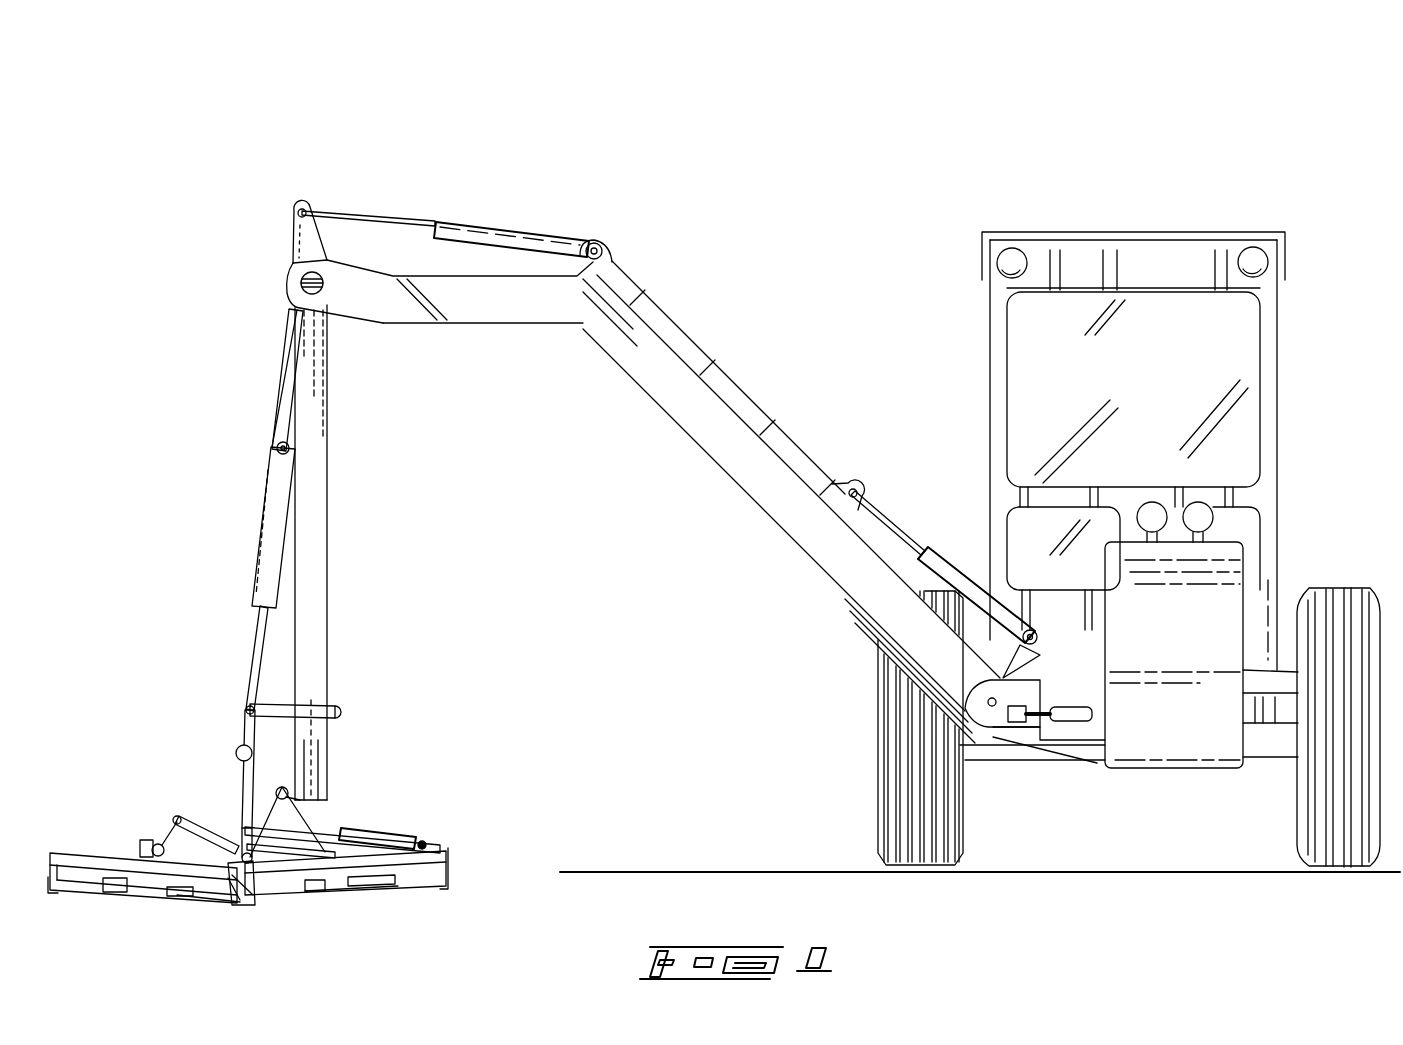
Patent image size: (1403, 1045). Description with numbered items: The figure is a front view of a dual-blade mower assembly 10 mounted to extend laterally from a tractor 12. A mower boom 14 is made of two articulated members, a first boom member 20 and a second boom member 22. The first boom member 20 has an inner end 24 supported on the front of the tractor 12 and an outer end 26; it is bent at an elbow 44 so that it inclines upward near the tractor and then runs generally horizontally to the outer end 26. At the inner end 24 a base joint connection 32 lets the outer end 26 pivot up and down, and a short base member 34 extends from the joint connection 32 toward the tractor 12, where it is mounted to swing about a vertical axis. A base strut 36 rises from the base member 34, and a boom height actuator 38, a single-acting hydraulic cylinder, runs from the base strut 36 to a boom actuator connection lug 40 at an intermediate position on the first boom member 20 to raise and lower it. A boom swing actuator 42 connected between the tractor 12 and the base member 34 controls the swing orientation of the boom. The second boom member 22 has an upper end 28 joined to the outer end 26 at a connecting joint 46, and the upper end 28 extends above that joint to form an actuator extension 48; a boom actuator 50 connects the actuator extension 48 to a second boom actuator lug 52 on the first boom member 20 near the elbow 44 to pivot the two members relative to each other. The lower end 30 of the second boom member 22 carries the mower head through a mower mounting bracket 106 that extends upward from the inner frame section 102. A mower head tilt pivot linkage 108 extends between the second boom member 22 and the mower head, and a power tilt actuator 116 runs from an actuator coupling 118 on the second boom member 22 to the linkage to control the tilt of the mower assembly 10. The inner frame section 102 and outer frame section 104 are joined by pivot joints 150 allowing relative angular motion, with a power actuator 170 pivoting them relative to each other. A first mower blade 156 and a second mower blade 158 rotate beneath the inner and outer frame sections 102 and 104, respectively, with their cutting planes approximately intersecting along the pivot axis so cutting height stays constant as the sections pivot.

The dual-blade mower assembly 10 is at (178, 712).
The tractor 12 is at (1284, 401).
The mower boom 14 is at (403, 395).
The first boom member 20 is at (745, 483).
The second boom member 22 is at (313, 610).
The inner end 24 is at (928, 637).
The outer end 26 is at (360, 300).
The upper end 28 is at (300, 340).
The lower end 30 is at (318, 762).
The base joint connection 32 is at (985, 702).
The base member 34 is at (998, 717).
The base strut 36 is at (1032, 652).
The boom height actuator 38 is at (943, 562).
The boom actuator connection lug 40 is at (838, 495).
The boom swing actuator 42 is at (1085, 722).
The elbow 44 is at (580, 303).
The connecting joint 46 is at (298, 280).
The actuator extension 48 is at (302, 208).
The boom actuator 50 is at (510, 233).
The second boom actuator lug 52 is at (610, 245).
The inner frame section 102 is at (445, 855).
The outer frame section 104 is at (80, 857).
The mower mounting bracket 106 is at (290, 823).
The mower head tilt pivot linkage 108 is at (235, 728).
The power tilt actuator 116 is at (265, 530).
The actuator coupling 118 is at (285, 430).
The pivot joint 150 is at (248, 905).
The first mower blade 156 is at (350, 893).
The second mower blade 158 is at (155, 893).
The power actuator 170 is at (405, 832).